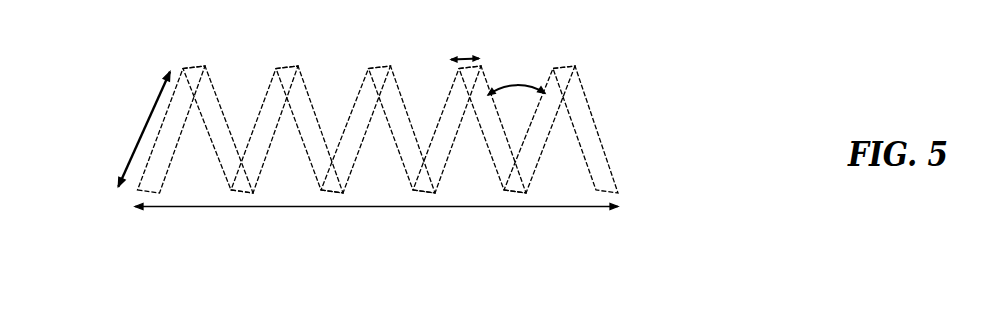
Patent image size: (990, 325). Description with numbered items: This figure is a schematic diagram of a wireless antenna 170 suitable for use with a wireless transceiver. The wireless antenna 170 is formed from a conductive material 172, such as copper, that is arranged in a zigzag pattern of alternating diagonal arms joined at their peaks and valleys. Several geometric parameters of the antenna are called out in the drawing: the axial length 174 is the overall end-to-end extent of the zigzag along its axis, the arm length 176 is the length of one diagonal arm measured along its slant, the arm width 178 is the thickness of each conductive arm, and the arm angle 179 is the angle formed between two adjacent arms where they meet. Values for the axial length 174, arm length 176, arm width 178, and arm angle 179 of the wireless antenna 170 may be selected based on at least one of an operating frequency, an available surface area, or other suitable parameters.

The wireless antenna 170 is at (417, 111).
The conductive material 172 is at (608, 162).
The axial length 174 is at (357, 250).
The arm length 176 is at (144, 123).
The arm width 178 is at (463, 40).
The arm angle 179 is at (537, 84).